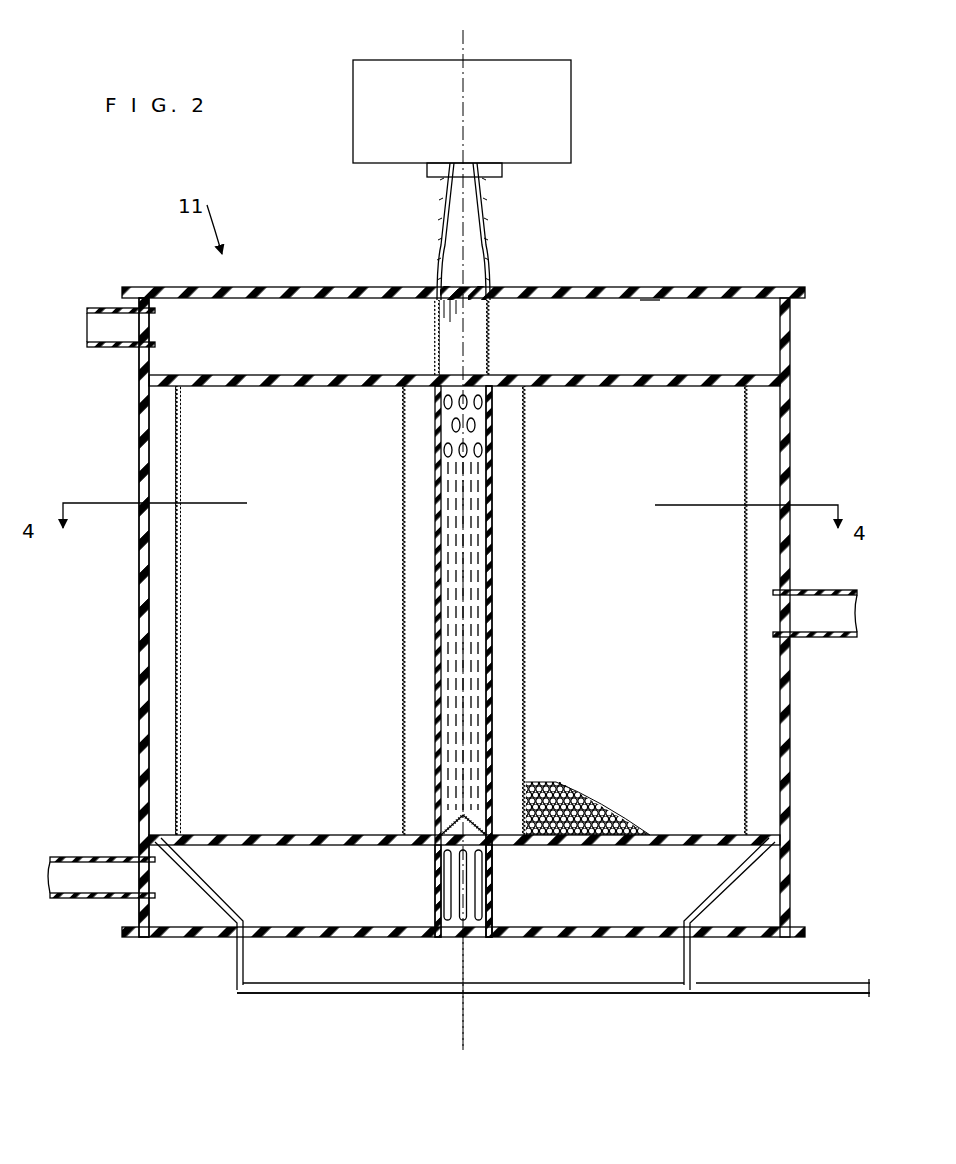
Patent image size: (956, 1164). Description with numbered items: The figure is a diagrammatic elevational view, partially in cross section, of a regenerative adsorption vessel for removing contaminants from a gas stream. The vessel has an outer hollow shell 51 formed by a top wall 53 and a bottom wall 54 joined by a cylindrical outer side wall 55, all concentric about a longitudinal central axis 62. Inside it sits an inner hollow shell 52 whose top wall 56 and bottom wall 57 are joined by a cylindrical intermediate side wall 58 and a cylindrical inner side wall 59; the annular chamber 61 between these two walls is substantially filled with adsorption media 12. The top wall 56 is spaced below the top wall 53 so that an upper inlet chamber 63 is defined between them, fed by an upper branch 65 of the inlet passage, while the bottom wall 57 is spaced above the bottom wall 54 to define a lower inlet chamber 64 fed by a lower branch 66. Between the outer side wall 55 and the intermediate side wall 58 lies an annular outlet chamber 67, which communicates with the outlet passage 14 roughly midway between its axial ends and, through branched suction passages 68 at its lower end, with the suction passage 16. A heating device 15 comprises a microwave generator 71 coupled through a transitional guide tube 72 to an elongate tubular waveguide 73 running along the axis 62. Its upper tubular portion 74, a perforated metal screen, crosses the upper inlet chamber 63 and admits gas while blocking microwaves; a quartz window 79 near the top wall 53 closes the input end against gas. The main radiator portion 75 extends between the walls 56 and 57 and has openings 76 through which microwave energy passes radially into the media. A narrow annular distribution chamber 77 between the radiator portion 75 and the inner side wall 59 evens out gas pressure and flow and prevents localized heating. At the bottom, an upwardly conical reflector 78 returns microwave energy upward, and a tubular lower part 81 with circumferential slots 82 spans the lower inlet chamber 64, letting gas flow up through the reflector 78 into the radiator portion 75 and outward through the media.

The adsorption media 12 is at (556, 780).
The outlet passage 14 is at (812, 625).
The heating device 15 is at (551, 58).
The suction passage 16 is at (822, 995).
The outer hollow shell 51 is at (136, 699).
The inner hollow shell 52 is at (173, 445).
The top wall 53 is at (726, 288).
The bottom wall 54 is at (620, 939).
The outer side wall 55 is at (146, 636).
The top wall 56 is at (320, 382).
The bottom wall 57 is at (307, 833).
The intermediate side wall 58 is at (180, 752).
The inner side wall 59 is at (400, 747).
The annular chamber 61 is at (683, 733).
The longitudinal central axis 62 is at (467, 1030).
The upper inlet chamber 63 is at (640, 300).
The lower inlet chamber 64 is at (283, 968).
The upper branch 65 is at (96, 318).
The lower branch 66 is at (93, 870).
The annular outlet chamber 67 is at (762, 421).
The branched suction passages 68 is at (205, 900).
The microwave generator 71 is at (392, 70).
The transitional guide tube 72 is at (479, 254).
The tubular waveguide 73 is at (495, 468).
The upper tubular portion 74 is at (493, 340).
The main radiator portion 75 is at (491, 542).
The openings 76 is at (478, 603).
The annular distribution chamber 77 is at (510, 664).
The reflector 78 is at (440, 822).
The window 79 is at (448, 288).
The tubular lower part 81 is at (492, 927).
The slots 82 is at (460, 880).